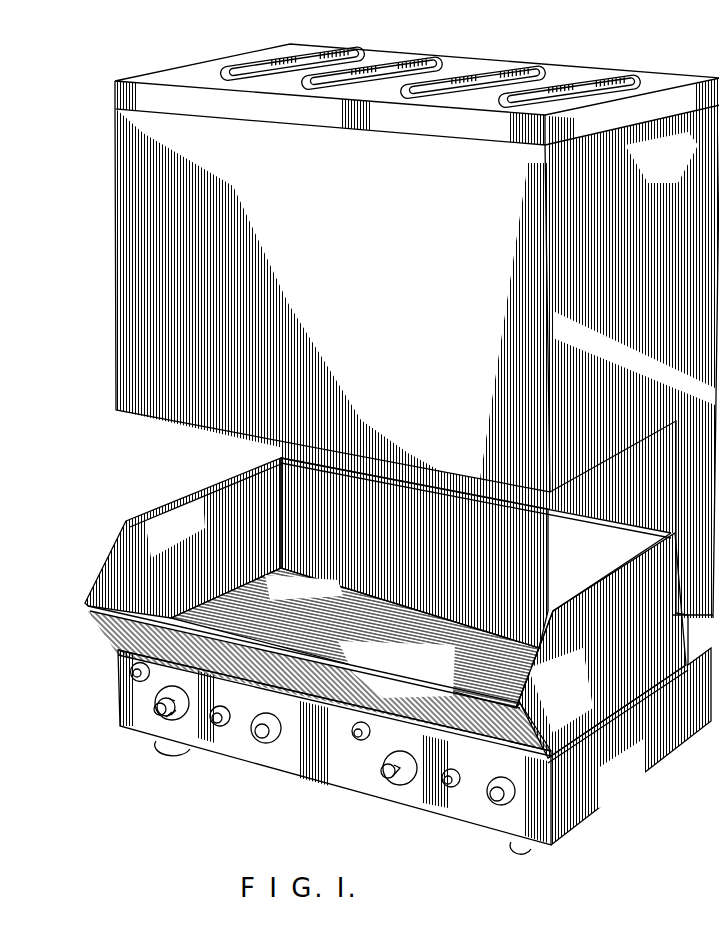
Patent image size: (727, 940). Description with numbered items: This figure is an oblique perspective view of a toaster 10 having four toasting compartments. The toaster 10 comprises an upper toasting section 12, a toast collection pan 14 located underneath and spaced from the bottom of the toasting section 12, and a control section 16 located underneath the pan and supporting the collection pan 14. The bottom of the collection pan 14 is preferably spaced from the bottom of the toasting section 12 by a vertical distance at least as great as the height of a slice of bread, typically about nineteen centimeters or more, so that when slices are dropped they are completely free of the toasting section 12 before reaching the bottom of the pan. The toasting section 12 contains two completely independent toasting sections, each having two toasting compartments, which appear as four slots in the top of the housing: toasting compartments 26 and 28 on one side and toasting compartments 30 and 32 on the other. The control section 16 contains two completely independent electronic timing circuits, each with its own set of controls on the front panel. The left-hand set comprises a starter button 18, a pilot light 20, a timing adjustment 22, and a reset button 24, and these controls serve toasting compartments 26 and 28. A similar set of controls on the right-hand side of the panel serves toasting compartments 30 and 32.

The toaster 10 is at (89, 267).
The toasting section 12 is at (130, 178).
The toast collection pan 14 is at (622, 563).
The control section 16 is at (637, 738).
The starter button 18 is at (256, 736).
The pilot light 20 is at (208, 718).
The timing adjustment 22 is at (150, 704).
The reset button 24 is at (122, 662).
The toasting compartment 26 is at (263, 62).
The toasting compartment 28 is at (360, 63).
The toasting compartment 30 is at (455, 68).
The toasting compartment 32 is at (553, 78).